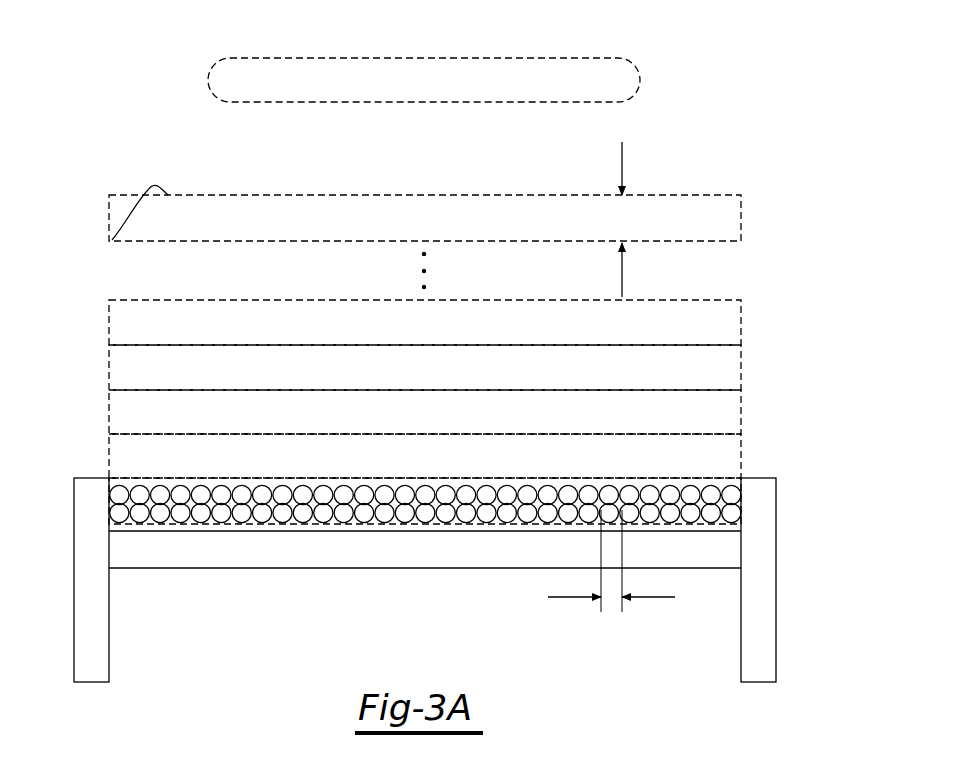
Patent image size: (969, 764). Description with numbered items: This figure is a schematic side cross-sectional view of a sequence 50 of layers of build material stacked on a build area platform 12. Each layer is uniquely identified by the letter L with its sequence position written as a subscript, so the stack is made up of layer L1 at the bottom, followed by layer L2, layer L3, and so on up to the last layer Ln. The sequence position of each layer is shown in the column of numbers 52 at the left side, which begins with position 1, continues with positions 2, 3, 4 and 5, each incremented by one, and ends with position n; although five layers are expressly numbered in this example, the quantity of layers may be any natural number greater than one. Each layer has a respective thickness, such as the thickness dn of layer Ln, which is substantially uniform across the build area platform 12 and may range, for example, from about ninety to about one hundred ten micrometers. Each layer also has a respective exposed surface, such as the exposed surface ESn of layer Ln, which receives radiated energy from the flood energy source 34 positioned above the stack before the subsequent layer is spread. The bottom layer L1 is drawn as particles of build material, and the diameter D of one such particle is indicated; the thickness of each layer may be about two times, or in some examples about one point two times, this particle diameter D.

The flood energy source 34 is at (208, 80).
The sequence of layers 50 is at (712, 46).
The build area platform 12 is at (333, 553).
The column of numbers 52 is at (45, 533).
The sequence position 1 is at (109, 503).
The sequence position 2 is at (109, 455).
The sequence position 3 is at (109, 411).
The sequence position 4 is at (109, 367).
The sequence position 5 is at (109, 323).
The sequence position n is at (109, 217).
The exposed surface of layer n ESn is at (112, 240).
The layer L1 is at (741, 506).
The layer L2 is at (741, 457).
The layer L3 is at (741, 412).
The layer Ln is at (741, 218).
The thickness of layer n dn is at (637, 219).
The particle diameter D is at (611, 561).